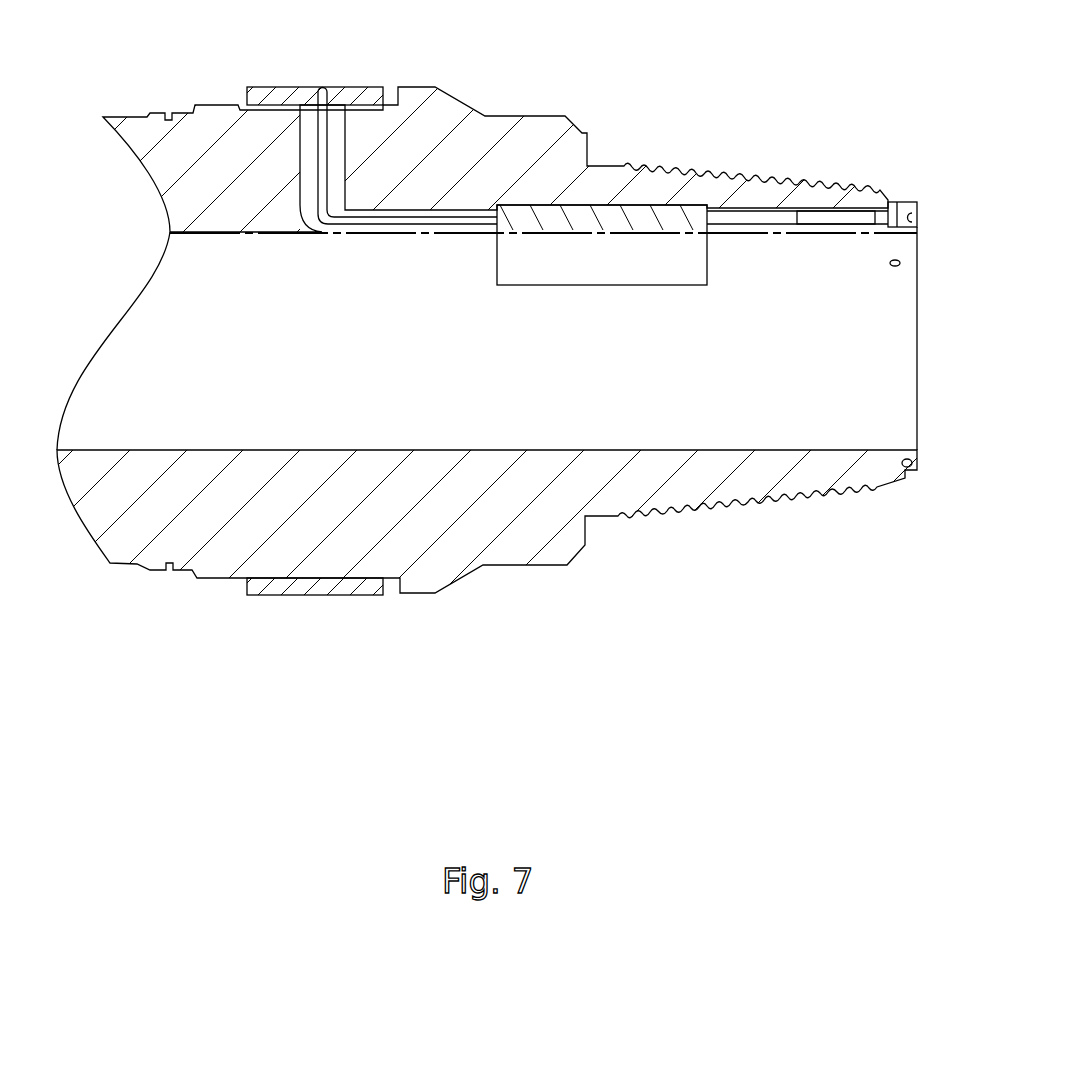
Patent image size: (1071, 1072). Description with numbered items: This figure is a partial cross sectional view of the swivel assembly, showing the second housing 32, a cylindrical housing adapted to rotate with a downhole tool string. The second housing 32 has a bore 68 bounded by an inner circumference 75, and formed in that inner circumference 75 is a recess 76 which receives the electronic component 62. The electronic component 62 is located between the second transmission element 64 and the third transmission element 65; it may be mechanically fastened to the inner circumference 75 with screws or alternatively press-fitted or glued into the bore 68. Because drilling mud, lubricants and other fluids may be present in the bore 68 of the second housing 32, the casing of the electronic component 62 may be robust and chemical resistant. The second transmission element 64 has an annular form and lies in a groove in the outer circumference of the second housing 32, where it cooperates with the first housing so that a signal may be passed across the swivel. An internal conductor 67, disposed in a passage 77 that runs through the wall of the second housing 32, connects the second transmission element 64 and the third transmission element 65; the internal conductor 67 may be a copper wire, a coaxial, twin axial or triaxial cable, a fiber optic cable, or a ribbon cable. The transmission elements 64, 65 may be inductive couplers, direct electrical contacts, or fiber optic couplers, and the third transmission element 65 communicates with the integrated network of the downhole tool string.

The second housing 32 is at (393, 525).
The electronic component 62 is at (607, 226).
The second transmission element 64 is at (322, 88).
The third transmission element 65 is at (916, 212).
The internal conductor 67 is at (478, 220).
The bore 68 is at (490, 380).
The inner circumference 75 is at (450, 233).
The recess 76 is at (594, 205).
The passage 77 is at (349, 228).